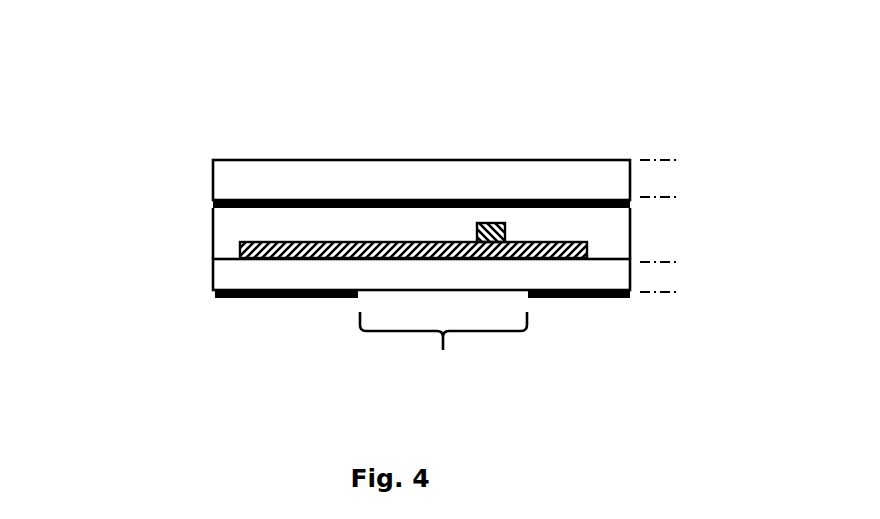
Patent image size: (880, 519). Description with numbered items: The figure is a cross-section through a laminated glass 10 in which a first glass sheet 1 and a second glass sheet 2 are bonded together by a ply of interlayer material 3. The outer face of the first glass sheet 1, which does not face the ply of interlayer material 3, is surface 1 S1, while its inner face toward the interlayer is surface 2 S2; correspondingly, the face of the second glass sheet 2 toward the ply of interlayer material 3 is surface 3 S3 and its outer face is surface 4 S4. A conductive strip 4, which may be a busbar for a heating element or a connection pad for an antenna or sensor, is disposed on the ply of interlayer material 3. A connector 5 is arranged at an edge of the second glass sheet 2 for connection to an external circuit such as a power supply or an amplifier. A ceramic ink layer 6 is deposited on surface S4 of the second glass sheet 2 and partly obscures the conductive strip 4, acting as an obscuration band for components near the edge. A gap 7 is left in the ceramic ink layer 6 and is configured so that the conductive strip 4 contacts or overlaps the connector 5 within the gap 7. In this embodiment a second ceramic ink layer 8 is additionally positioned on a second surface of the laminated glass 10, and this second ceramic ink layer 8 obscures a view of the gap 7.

The laminated glass 10 is at (165, 72).
The first glass sheet 1 is at (201, 183).
The second glass sheet 2 is at (201, 277).
The ply of interlayer material 3 is at (201, 232).
The conductive strip 4 is at (303, 229).
The connector 5 is at (500, 210).
The ceramic ink layer 6 is at (277, 310).
The gap 7 is at (443, 357).
The second ceramic ink layer 8 is at (438, 188).
The surface 1 S1 is at (695, 154).
The surface 2 S2 is at (695, 189).
The surface 3 S3 is at (700, 270).
The surface 4 S4 is at (700, 300).